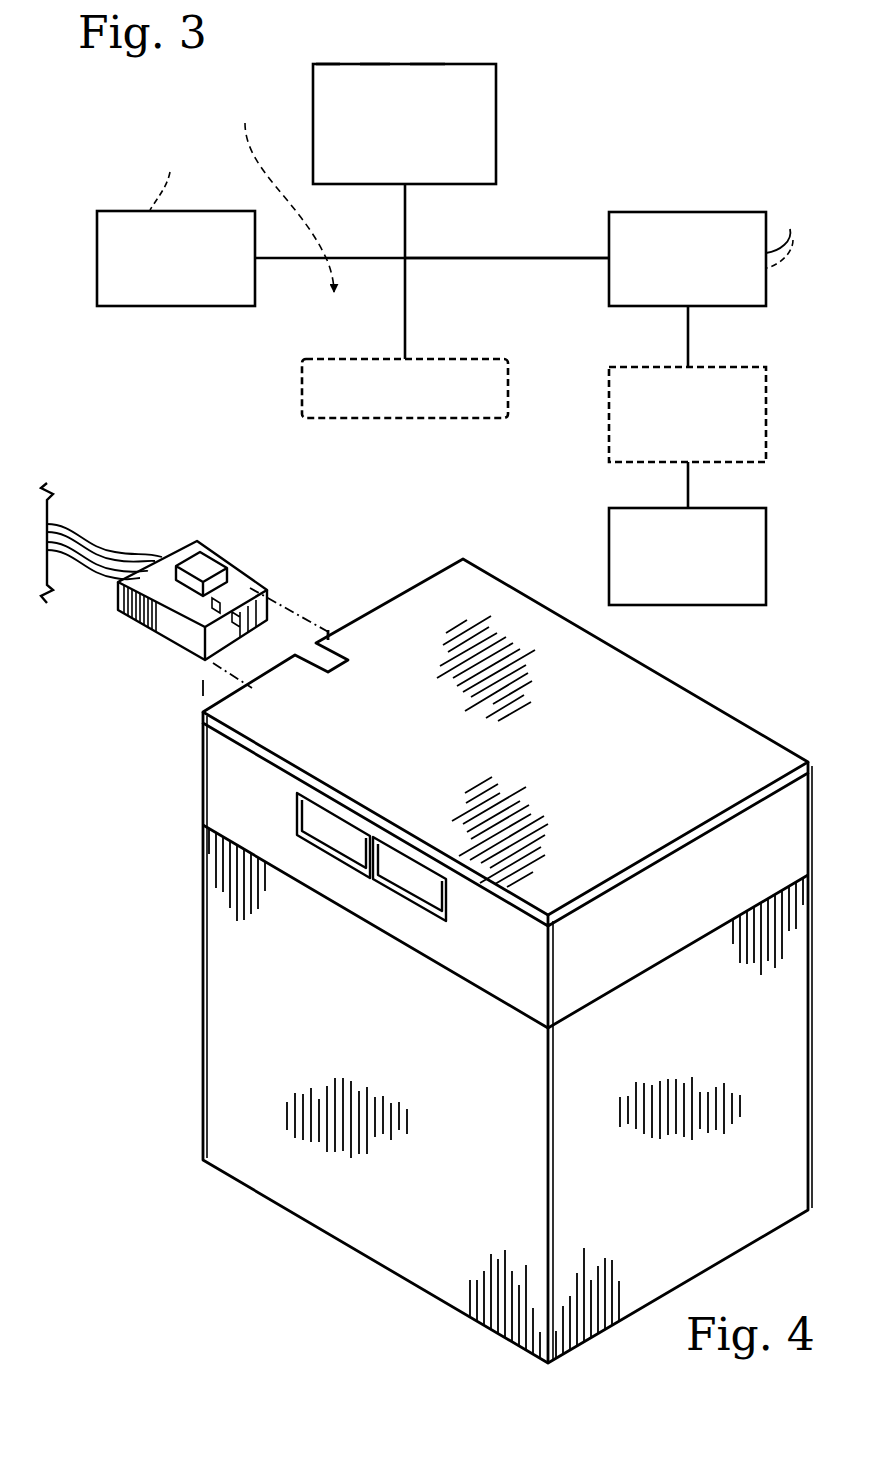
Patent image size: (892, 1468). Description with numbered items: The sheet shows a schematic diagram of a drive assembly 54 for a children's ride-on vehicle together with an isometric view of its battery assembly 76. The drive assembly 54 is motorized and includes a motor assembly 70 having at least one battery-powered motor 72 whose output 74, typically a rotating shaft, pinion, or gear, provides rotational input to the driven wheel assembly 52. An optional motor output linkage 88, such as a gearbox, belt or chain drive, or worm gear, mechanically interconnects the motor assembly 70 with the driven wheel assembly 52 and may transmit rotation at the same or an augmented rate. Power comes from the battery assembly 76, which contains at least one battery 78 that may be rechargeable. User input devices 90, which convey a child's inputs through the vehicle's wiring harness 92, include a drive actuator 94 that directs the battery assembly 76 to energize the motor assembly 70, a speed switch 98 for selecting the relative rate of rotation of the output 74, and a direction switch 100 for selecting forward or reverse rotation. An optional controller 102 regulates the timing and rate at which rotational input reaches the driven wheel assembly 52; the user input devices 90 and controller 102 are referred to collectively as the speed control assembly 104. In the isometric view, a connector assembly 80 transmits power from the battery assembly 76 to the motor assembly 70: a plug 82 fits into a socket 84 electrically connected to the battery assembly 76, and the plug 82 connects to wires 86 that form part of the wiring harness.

In FIG. 3, the driven wheel assembly 52 is at (712, 508).
In FIG. 3, the drive assembly 54 is at (689, 122).
In FIG. 3, the motor assembly 70 is at (715, 211).
In FIG. 3, the motor 72 is at (788, 234).
In FIG. 3, the output 74 is at (688, 348).
In FIG. 3, the battery assembly 76 is at (205, 210).
In FIG. 4, the battery assembly 76 is at (201, 1050).
In FIG. 3, the battery 78 is at (128, 211).
In FIG. 4, the connector assembly 80 is at (154, 634).
In FIG. 4, the plug 82 is at (146, 651).
In FIG. 4, the socket 84 is at (313, 631).
In FIG. 4, the wires 86 is at (91, 578).
In FIG. 3, the motor output linkage 88 is at (718, 367).
In FIG. 3, the user input devices 90 is at (466, 61).
In FIG. 3, the wiring harness 92 is at (519, 258).
In FIG. 3, the drive actuator 94 is at (323, 64).
In FIG. 3, the speed switch 98 is at (372, 64).
In FIG. 3, the direction switch 100 is at (425, 64).
In FIG. 3, the controller 102 is at (452, 359).
In FIG. 3, the speed control assembly 104 is at (304, 122).